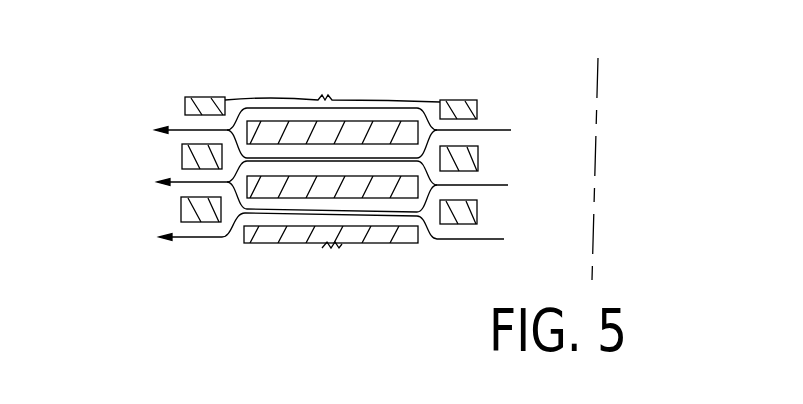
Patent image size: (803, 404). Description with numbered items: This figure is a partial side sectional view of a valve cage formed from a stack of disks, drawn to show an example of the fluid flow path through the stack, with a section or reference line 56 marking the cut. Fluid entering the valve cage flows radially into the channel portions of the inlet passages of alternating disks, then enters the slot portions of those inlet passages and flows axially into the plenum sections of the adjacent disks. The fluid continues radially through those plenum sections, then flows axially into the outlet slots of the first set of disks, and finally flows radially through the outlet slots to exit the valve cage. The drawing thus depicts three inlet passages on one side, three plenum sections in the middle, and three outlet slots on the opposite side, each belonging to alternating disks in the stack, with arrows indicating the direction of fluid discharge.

The section line 56 is at (596, 158).